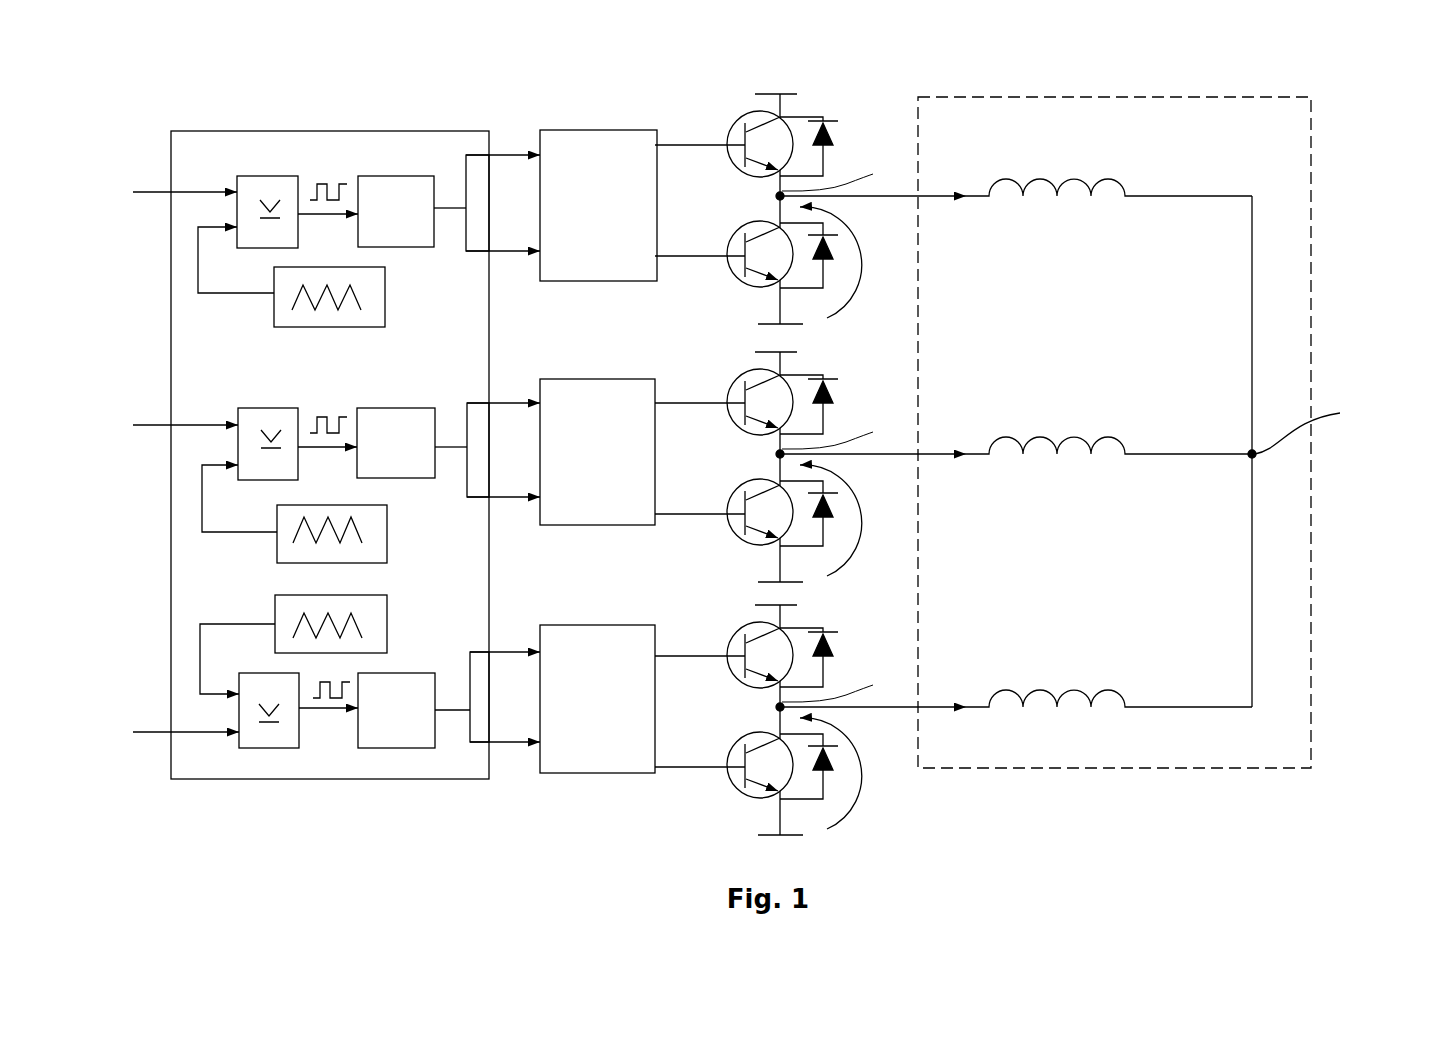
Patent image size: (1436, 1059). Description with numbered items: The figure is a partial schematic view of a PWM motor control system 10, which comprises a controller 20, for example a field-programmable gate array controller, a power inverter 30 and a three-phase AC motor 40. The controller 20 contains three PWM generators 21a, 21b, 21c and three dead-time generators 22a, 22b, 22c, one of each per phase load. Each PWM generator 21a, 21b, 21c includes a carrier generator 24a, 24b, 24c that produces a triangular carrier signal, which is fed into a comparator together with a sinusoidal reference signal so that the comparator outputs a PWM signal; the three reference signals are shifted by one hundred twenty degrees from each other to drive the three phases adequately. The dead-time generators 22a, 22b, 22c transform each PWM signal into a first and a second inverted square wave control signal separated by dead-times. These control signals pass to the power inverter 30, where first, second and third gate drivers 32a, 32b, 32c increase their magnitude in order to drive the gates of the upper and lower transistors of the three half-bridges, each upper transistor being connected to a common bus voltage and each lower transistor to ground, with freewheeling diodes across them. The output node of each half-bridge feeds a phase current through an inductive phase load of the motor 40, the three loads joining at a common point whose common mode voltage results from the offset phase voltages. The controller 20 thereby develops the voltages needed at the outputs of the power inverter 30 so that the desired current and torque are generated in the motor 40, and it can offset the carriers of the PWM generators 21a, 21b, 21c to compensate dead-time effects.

The PWM motor control system 10 is at (1348, 130).
The controller 20 is at (148, 80).
The power inverter 30 is at (510, 80).
The three-phase AC motor 40 is at (1323, 80).
The first PWM generator 21a is at (195, 311).
The second PWM generator 21b is at (208, 537).
The third PWM generator 21c is at (185, 673).
The first dead-time generator 22a is at (412, 211).
The second dead-time generator 22b is at (412, 443).
The third dead-time generator 22c is at (414, 710).
The first carrier generator 24a is at (385, 308).
The second carrier generator 24b is at (387, 533).
The third carrier generator 24c is at (387, 628).
The first gate driver 32a is at (598, 205).
The second gate driver 32b is at (597, 452).
The third gate driver 32c is at (597, 699).